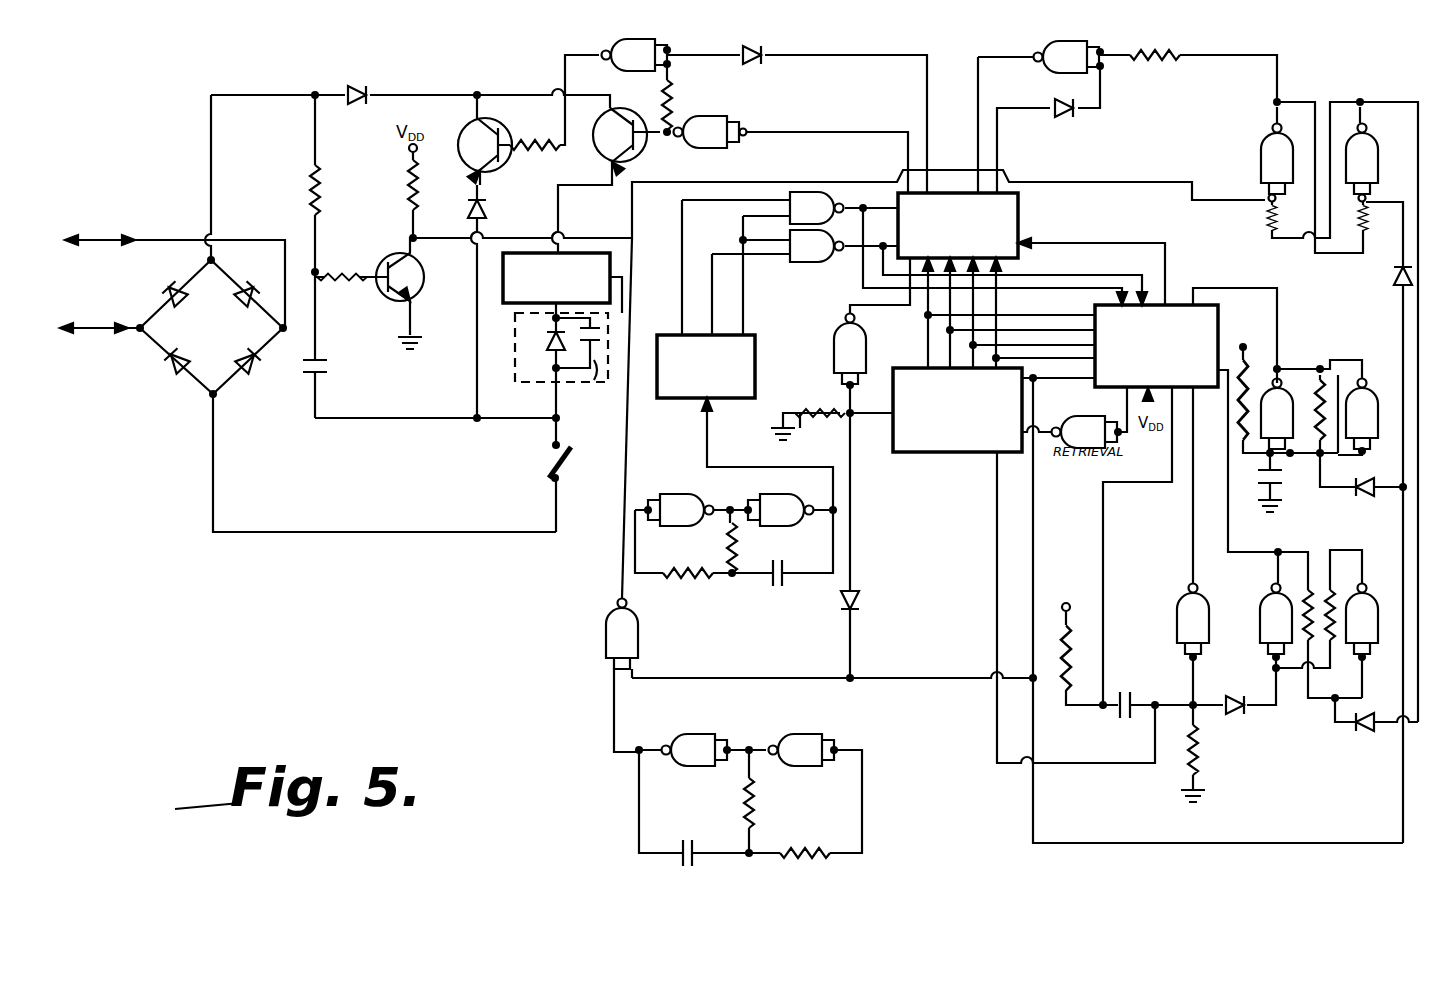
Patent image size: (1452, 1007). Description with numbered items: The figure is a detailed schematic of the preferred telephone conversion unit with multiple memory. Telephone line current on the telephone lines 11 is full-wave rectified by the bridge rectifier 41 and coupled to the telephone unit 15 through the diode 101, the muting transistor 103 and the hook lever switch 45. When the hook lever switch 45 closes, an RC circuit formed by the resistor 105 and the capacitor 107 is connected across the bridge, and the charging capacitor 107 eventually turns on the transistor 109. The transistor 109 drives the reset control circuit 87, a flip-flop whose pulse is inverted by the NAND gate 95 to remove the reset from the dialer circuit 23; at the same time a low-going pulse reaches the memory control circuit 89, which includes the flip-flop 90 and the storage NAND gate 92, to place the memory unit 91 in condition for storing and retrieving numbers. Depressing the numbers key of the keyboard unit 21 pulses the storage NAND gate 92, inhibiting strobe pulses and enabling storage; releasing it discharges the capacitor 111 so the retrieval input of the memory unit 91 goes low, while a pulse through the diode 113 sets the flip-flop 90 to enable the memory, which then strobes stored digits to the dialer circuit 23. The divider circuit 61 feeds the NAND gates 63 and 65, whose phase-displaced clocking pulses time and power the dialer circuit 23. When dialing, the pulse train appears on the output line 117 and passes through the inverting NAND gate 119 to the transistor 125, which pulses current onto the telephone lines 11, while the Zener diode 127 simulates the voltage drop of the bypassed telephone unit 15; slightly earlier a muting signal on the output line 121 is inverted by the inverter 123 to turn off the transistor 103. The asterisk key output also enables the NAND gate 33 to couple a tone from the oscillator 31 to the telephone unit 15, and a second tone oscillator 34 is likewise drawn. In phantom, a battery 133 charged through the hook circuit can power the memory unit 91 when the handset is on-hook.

The telephone lines 11 is at (118, 240).
The bridge rectifier 41 is at (228, 340).
The diode 101 is at (357, 85).
The resistor 105 is at (322, 195).
The capacitor 107 is at (327, 368).
The transistor 109 is at (412, 302).
The transistor 125 is at (506, 98).
The Zener diode 127 is at (486, 212).
The battery 133 is at (590, 380).
The hook lever switch 45 is at (518, 475).
The telephone unit 15 is at (544, 301).
The NAND gate 119 is at (652, 42).
The output line 117 is at (905, 58).
The muting transistor 103 is at (640, 152).
The inverter 123 is at (702, 150).
The output line 121 is at (780, 135).
The NAND gate 65 is at (822, 205).
The NAND gate 63 is at (805, 262).
The divider circuit 61 is at (680, 402).
The oscillator 34 is at (732, 588).
The NAND gate 33 is at (640, 635).
The oscillator 31 is at (862, 750).
The keyboard unit 21 is at (920, 455).
The dialer circuit 23 is at (958, 225).
The memory unit 91 is at (1143, 371).
The NAND gate 95 is at (1040, 72).
The reset control circuit 87 is at (1300, 105).
The memory control circuit 89 is at (1343, 536).
The flip-flop 90 is at (1366, 608).
The storage NAND gate 92 is at (1178, 628).
The capacitor 111 is at (1100, 712).
The diode 113 is at (1233, 716).